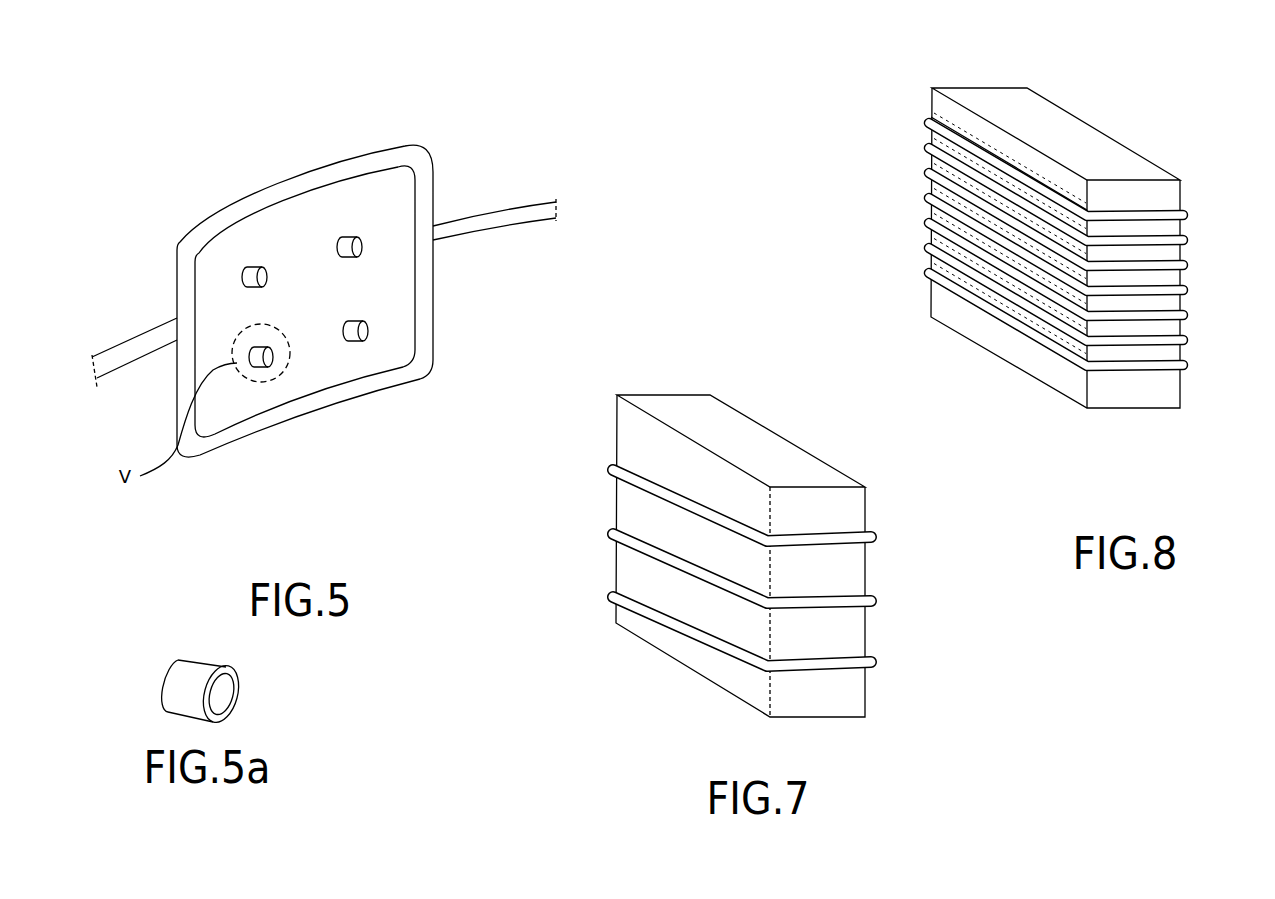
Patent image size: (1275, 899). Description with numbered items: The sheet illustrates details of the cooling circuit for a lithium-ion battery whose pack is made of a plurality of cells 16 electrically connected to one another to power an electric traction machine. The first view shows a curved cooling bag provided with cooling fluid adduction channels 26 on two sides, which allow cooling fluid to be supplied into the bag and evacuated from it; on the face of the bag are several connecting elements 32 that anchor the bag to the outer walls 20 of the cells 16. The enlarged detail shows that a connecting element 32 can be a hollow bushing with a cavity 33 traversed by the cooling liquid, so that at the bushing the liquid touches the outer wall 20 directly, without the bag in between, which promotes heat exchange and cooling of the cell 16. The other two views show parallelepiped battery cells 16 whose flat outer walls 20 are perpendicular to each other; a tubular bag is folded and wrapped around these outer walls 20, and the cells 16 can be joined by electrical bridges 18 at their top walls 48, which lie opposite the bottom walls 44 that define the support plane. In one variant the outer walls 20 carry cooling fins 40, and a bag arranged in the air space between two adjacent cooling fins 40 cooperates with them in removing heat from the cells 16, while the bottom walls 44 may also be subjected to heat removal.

In FIG. 7, the cell 16 is at (818, 478).
In FIG. 8, the cell 16 is at (1113, 165).
In FIG. 7, the electrical bridge 18 is at (703, 403).
In FIG. 7, the outer wall 20 is at (647, 442).
In FIG. 8, the outer wall 20 is at (1180, 250).
In FIG. 5, the cooling fluid adduction channel 26 is at (472, 224).
In FIG. 5, the connecting element 32 is at (343, 240).
In FIG. 5A, the connecting element 32 is at (182, 687).
In FIG. 5A, the cavity 33 is at (218, 701).
In FIG. 8, the cooling fin 40 is at (935, 117).
In FIG. 7, the bottom wall 44 is at (685, 668).
In FIG. 8, the bottom wall 44 is at (1123, 413).
In FIG. 7, the top wall 48 is at (672, 406).
In FIG. 8, the top wall 48 is at (1053, 131).